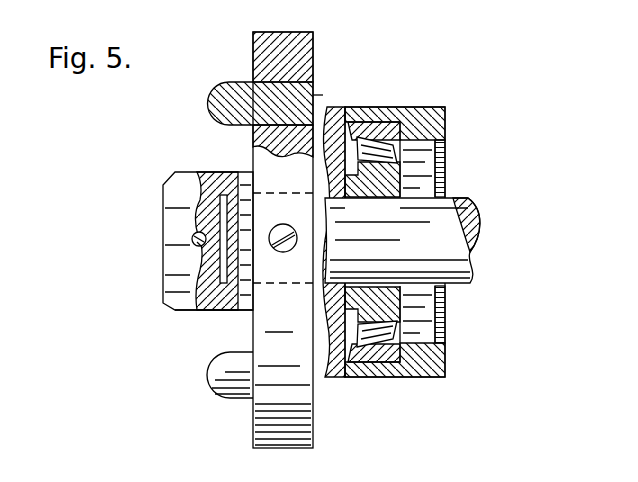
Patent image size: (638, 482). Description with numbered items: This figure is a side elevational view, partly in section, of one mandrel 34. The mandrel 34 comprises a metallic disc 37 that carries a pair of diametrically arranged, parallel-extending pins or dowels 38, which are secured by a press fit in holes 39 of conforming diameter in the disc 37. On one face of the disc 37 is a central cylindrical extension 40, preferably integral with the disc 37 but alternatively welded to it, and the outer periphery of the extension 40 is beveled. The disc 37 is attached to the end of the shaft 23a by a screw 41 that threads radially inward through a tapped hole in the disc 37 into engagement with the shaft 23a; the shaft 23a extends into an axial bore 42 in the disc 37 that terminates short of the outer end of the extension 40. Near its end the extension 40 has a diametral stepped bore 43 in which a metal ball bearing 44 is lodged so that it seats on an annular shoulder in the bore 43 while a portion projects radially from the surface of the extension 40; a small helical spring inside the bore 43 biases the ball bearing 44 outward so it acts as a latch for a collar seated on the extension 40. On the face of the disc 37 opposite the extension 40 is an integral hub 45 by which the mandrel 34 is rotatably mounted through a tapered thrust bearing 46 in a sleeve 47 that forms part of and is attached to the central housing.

The shaft 23a is at (443, 208).
The mandrel 34 is at (165, 177).
The metallic disc 37 is at (263, 62).
The pins or dowels 38 is at (210, 106).
The holes 39 is at (313, 94).
The central cylindrical extension 40 is at (189, 312).
The screw 41 is at (282, 224).
The axial bore 42 is at (217, 210).
The diametral stepped bore 43 is at (197, 244).
The ball bearing 44 is at (192, 238).
The hub 45 is at (322, 378).
The tapered thrust bearing 46 is at (378, 146).
The sleeve 47 is at (428, 112).